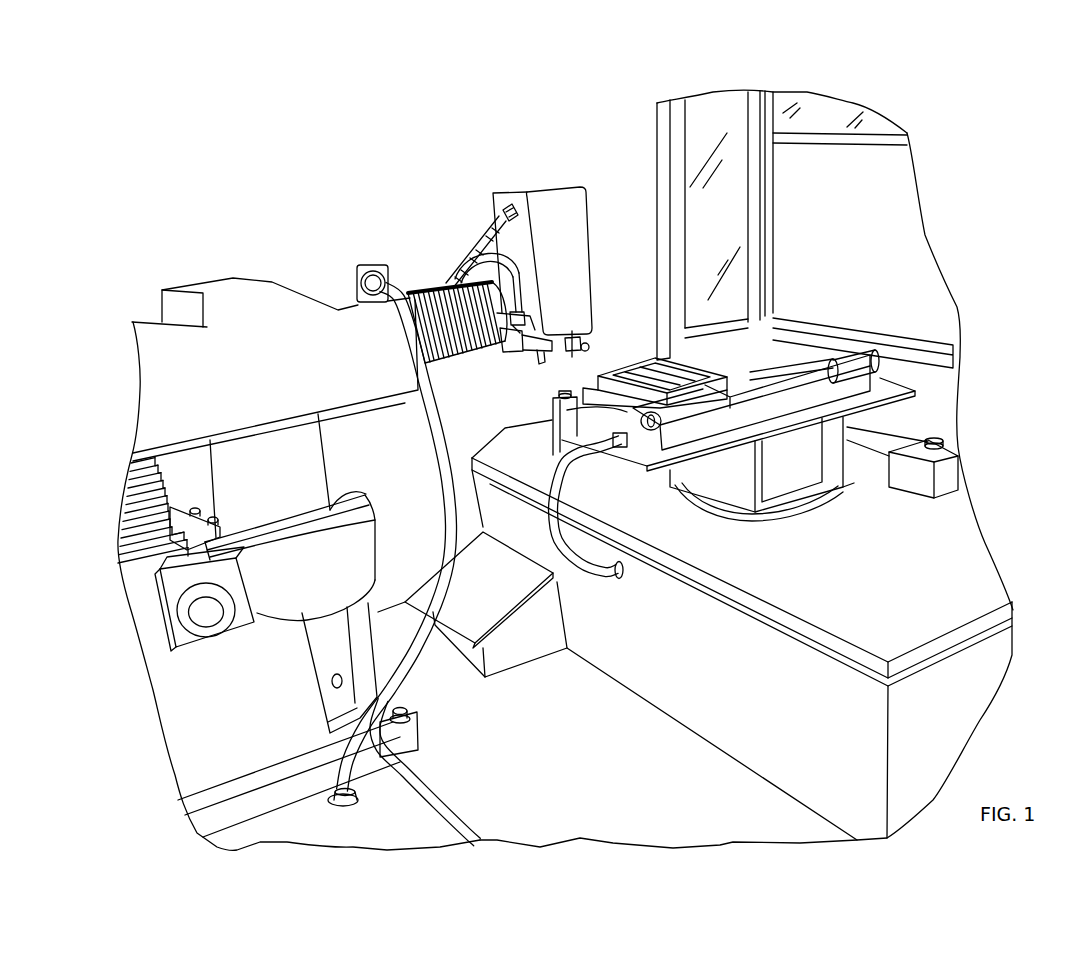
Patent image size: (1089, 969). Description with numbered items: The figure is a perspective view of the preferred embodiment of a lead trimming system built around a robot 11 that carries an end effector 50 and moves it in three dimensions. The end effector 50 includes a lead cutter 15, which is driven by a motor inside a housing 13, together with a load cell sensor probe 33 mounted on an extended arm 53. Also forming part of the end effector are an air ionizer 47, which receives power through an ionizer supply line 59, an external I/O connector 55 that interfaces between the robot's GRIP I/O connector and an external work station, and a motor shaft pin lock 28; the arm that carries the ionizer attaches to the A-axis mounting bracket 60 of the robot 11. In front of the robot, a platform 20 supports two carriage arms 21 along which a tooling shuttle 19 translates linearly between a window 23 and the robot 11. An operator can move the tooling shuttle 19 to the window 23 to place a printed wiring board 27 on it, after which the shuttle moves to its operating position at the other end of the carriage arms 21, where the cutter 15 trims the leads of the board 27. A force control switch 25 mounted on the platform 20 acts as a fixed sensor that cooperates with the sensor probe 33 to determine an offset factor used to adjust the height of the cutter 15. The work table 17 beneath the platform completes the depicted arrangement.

The robot 11 is at (284, 274).
The housing 13 is at (552, 187).
The lead cutter 15 is at (537, 355).
The work table 17 is at (652, 480).
The tooling shuttle 19 is at (600, 372).
The platform 20 is at (695, 453).
The carriage arms 21 is at (822, 365).
The window 23 is at (880, 205).
The force control switch 25 is at (556, 424).
The printed wiring board 27 is at (693, 368).
The motor shaft pin lock 28 is at (589, 348).
The load cell sensor probe 33 is at (583, 339).
The air ionizer 47 is at (516, 285).
The end effector 50 is at (593, 130).
The extended arm 53 is at (413, 288).
The external I/O connector 55 is at (517, 352).
The ionizer supply line 59 is at (506, 254).
The A-axis mounting bracket 60 is at (440, 281).